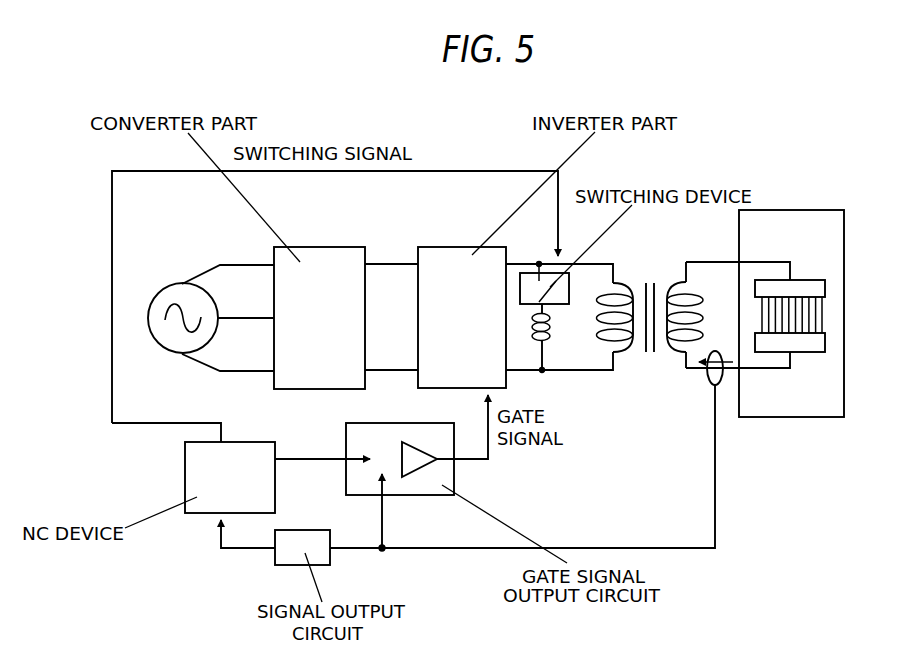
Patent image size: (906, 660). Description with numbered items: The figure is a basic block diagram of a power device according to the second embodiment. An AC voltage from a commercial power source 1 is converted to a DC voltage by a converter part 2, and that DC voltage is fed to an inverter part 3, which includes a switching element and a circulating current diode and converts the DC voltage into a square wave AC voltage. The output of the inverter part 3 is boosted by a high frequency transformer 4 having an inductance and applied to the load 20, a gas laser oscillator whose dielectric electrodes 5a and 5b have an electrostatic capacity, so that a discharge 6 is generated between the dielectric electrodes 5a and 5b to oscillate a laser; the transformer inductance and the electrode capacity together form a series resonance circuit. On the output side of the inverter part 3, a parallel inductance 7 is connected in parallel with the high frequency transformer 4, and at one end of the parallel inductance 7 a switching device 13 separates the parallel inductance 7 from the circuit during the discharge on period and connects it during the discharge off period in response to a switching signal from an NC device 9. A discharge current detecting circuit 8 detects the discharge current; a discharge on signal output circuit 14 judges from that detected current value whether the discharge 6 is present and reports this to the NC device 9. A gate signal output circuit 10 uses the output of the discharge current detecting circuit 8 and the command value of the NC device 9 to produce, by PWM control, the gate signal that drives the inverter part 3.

The commercial power source 1 is at (172, 286).
The converter part 2 is at (320, 247).
The inverter part 3 is at (460, 246).
The high frequency transformer 4 is at (649, 272).
The dielectric electrode 5a is at (810, 280).
The dielectric electrode 5b is at (813, 352).
The discharge 6 is at (802, 315).
The parallel inductance 7 is at (551, 333).
The discharge current detecting circuit 8 is at (708, 377).
The NC device 9 is at (185, 478).
The gate signal output circuit 10 is at (455, 477).
The switching device 13 is at (525, 273).
The discharge on signal output circuit 14 is at (301, 530).
The load 20 is at (793, 210).